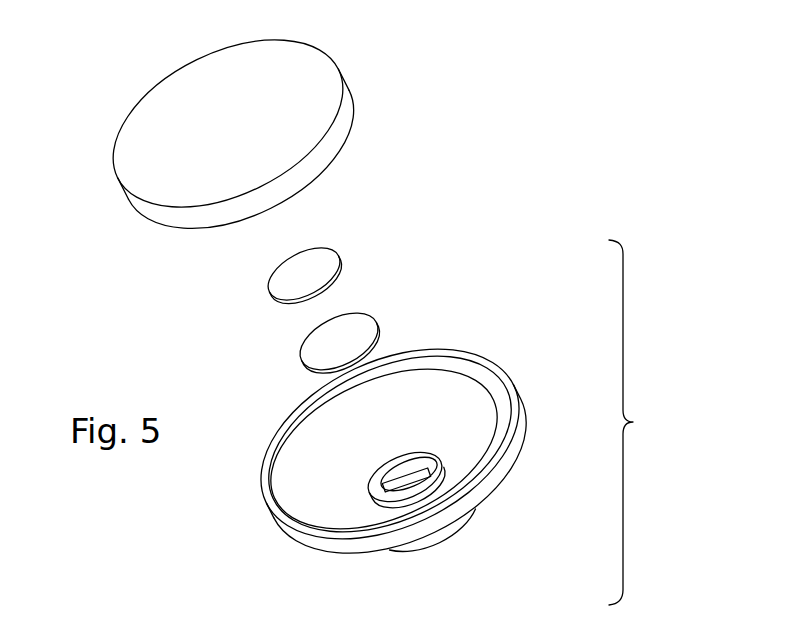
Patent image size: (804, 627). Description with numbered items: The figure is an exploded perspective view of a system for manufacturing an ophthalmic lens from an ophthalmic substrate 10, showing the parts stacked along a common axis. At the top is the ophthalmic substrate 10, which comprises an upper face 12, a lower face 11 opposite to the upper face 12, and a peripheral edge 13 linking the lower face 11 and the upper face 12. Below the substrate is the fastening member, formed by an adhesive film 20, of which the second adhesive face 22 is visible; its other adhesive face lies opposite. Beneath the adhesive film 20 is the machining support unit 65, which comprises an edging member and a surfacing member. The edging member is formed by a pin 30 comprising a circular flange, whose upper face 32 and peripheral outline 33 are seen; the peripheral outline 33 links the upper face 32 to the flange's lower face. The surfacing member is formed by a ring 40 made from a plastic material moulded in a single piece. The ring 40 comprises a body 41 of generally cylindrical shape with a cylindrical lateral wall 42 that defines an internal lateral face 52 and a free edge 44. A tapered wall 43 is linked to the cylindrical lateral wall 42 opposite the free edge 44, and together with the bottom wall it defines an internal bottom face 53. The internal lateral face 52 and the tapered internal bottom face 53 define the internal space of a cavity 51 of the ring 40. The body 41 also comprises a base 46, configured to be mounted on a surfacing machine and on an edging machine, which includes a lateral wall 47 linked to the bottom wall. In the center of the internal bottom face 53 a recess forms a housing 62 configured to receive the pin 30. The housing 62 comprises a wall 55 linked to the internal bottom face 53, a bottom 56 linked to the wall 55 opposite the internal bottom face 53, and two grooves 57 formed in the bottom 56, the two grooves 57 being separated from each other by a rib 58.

The ophthalmic substrate 10 is at (261, 147).
The lower face 11 is at (188, 227).
The upper face 12 is at (167, 97).
The peripheral edge 13 is at (162, 213).
The adhesive film 20 is at (342, 239).
The second adhesive face 22 is at (318, 257).
The pin 30 is at (352, 313).
The upper face 32 is at (312, 350).
The peripheral outline 33 is at (378, 332).
The ring 40 is at (404, 452).
The body 41 is at (380, 444).
The cylindrical lateral wall 42 is at (507, 448).
The tapered wall 43 is at (392, 542).
The free edge 44 is at (268, 483).
The base 46 is at (437, 557).
The lateral wall 47 is at (422, 543).
The cavity 51 is at (444, 394).
The internal lateral face 52 is at (288, 445).
The internal bottom face 53 is at (300, 462).
The wall 55 is at (392, 457).
The bottom 56 is at (413, 448).
The grooves 57 is at (387, 485).
The rib 58 is at (433, 453).
The housing 62 is at (375, 502).
The machining support unit 65 is at (640, 422).